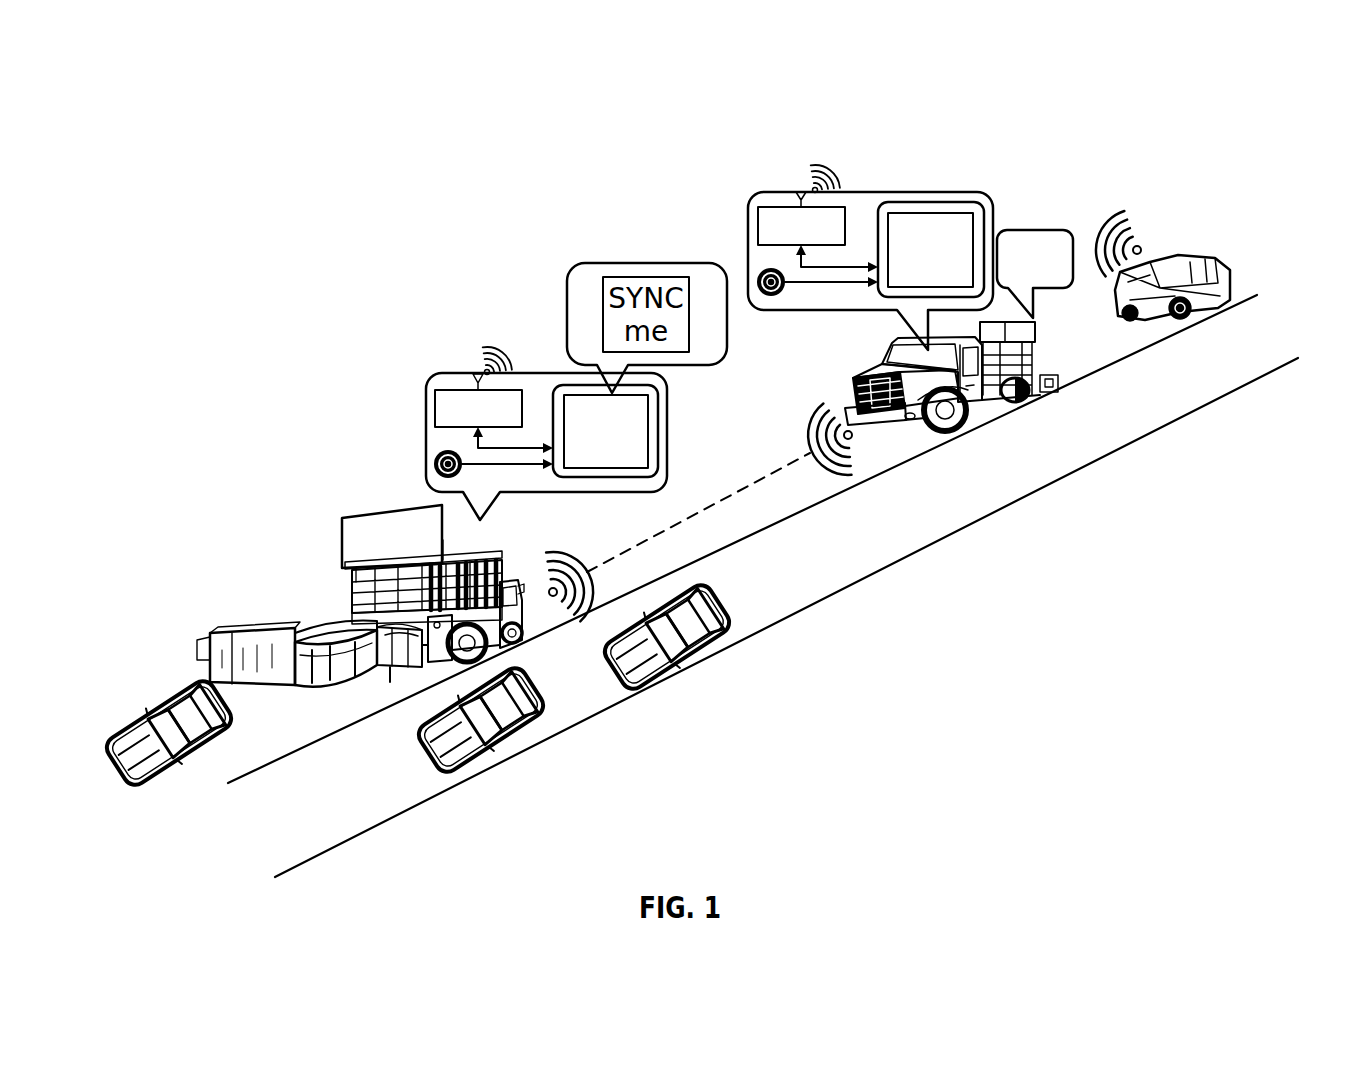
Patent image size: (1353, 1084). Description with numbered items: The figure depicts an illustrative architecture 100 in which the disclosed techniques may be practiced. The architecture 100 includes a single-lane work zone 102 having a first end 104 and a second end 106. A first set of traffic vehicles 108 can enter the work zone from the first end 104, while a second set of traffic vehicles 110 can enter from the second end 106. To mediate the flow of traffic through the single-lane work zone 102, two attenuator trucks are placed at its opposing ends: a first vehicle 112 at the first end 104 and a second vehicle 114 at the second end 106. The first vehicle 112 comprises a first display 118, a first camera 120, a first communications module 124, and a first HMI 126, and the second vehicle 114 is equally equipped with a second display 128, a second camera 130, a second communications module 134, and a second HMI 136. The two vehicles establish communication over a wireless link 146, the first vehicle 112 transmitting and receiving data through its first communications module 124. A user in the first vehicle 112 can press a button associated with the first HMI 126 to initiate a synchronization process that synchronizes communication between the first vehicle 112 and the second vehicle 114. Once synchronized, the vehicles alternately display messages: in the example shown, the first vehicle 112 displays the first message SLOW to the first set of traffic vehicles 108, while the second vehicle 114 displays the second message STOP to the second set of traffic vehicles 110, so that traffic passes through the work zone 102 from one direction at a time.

The architecture 100 is at (210, 152).
The single-lane work zone 102 is at (890, 535).
The first end 104 is at (342, 587).
The second end 106 is at (842, 210).
The first set of traffic vehicles 108 is at (145, 708).
The second set of traffic vehicles 110 is at (1185, 243).
The first vehicle 112 is at (480, 433).
The second vehicle 114 is at (862, 350).
The first display 118 is at (345, 517).
The first camera 120 is at (434, 460).
The first communications module 124 is at (438, 390).
The first HMI 126 is at (650, 412).
The second display 128 is at (1035, 230).
The second camera 130 is at (758, 275).
The second communications module 134 is at (768, 208).
The second HMI 136 is at (947, 203).
The wireless link 146 is at (750, 485).